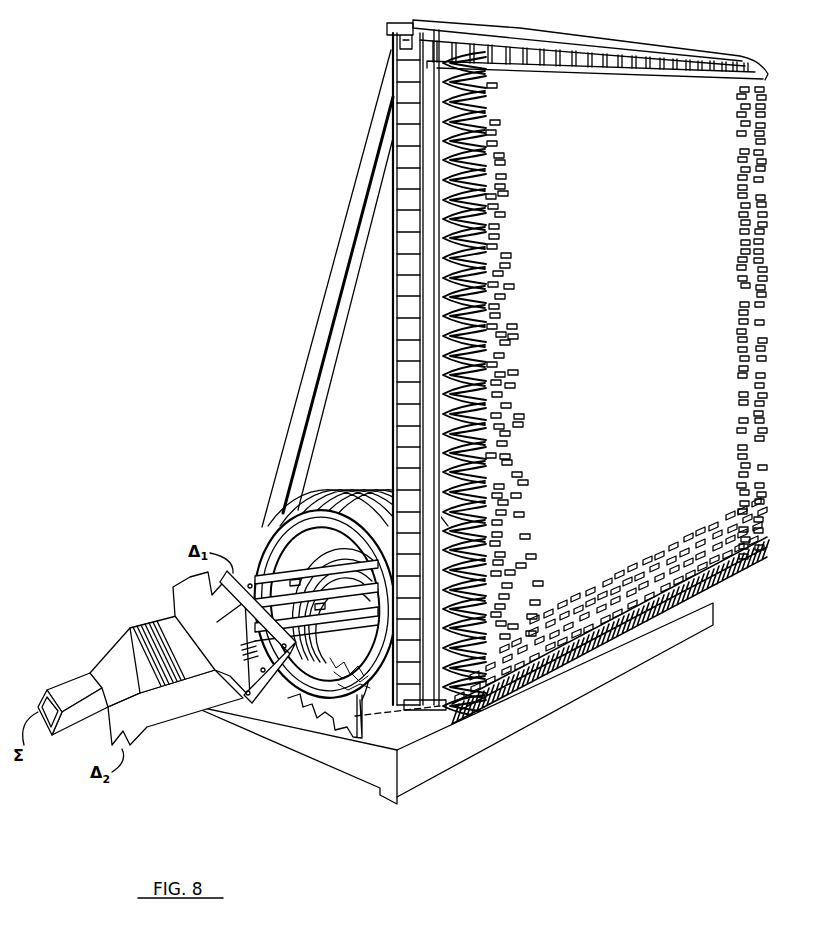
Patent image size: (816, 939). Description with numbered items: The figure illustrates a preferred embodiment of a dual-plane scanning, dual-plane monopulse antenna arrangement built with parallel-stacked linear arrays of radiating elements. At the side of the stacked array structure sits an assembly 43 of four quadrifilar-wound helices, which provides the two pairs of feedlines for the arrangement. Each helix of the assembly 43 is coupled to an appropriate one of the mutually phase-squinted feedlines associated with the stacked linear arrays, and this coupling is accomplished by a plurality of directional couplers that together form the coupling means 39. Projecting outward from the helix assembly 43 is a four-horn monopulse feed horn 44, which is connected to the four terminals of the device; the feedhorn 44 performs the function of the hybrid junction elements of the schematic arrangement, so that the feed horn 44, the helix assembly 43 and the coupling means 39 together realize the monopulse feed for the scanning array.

The coupling means 39 is at (347, 721).
The assembly of four quadrifilar-wound helices 43 is at (366, 514).
The four-horn monopulse feed horn 44 is at (166, 611).